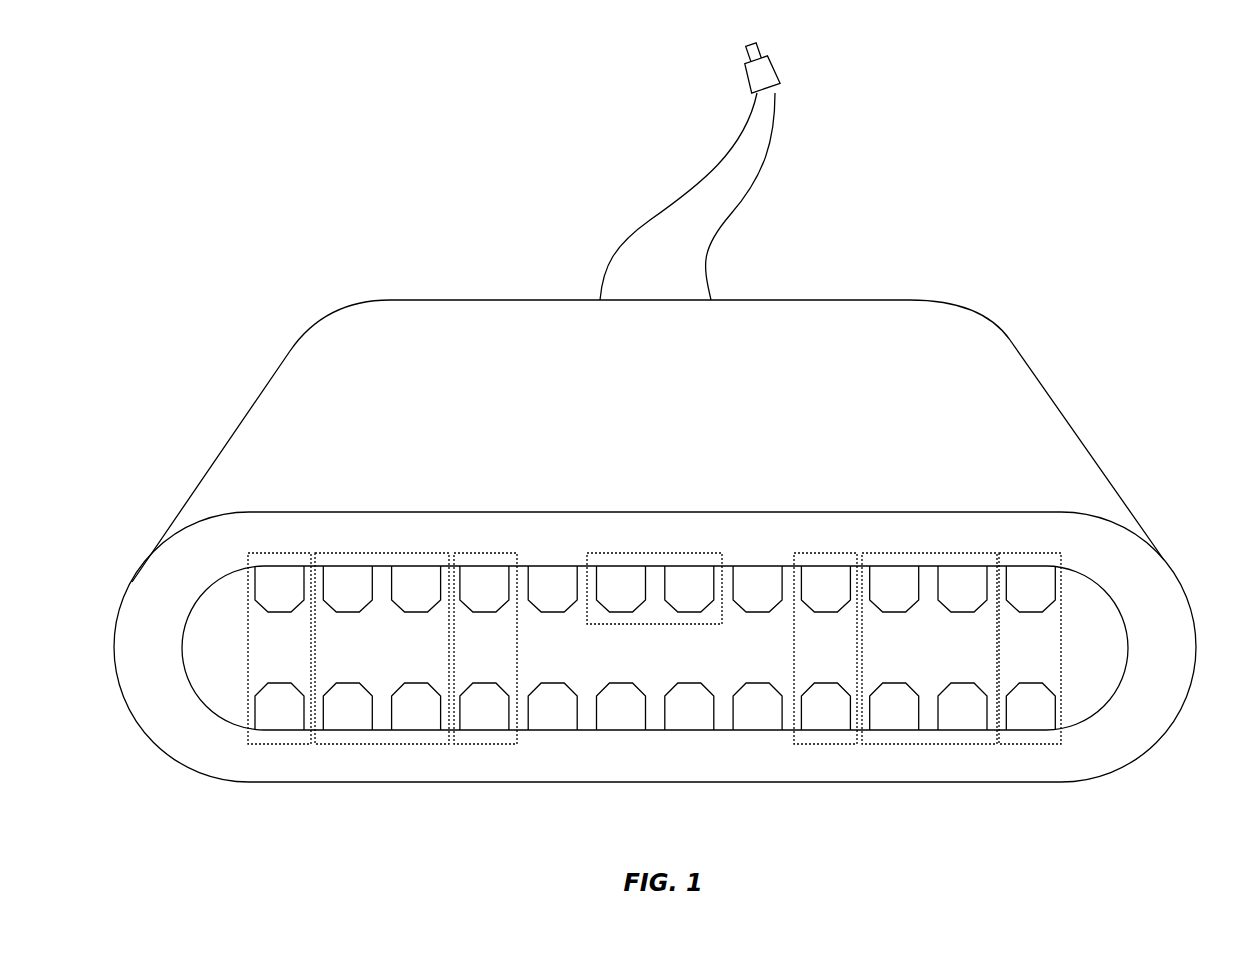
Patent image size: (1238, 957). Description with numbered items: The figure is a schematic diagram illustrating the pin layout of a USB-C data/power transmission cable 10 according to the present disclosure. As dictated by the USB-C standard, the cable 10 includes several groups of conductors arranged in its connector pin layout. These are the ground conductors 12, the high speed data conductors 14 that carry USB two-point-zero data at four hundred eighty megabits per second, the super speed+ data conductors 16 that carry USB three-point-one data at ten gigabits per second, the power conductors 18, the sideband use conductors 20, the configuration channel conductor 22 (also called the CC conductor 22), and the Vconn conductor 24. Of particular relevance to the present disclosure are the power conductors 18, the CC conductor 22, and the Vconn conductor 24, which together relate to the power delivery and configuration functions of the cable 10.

The USB-C data/power transmission cable 10 is at (437, 185).
The ground conductors 12 is at (281, 553).
The high speed data conductors 14 is at (660, 553).
The super speed+ data conductors 16 is at (385, 553).
The power conductors 18 is at (487, 553).
The sideband use conductors 20 is at (555, 565).
The configuration channel conductor 22 is at (762, 565).
The Vconn conductor 24 is at (554, 732).